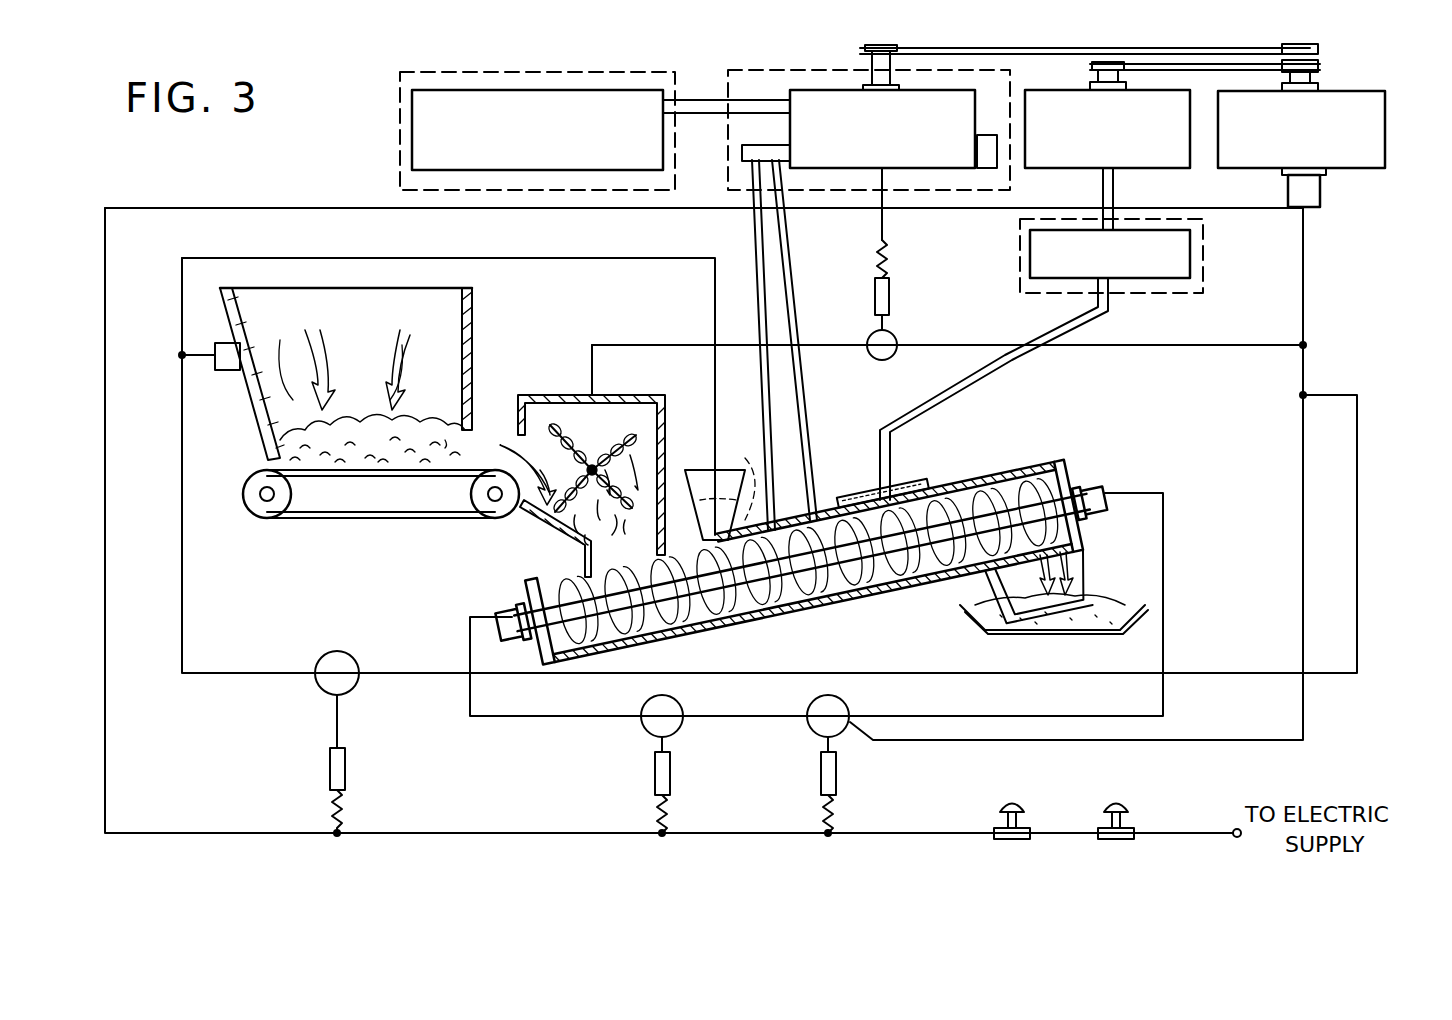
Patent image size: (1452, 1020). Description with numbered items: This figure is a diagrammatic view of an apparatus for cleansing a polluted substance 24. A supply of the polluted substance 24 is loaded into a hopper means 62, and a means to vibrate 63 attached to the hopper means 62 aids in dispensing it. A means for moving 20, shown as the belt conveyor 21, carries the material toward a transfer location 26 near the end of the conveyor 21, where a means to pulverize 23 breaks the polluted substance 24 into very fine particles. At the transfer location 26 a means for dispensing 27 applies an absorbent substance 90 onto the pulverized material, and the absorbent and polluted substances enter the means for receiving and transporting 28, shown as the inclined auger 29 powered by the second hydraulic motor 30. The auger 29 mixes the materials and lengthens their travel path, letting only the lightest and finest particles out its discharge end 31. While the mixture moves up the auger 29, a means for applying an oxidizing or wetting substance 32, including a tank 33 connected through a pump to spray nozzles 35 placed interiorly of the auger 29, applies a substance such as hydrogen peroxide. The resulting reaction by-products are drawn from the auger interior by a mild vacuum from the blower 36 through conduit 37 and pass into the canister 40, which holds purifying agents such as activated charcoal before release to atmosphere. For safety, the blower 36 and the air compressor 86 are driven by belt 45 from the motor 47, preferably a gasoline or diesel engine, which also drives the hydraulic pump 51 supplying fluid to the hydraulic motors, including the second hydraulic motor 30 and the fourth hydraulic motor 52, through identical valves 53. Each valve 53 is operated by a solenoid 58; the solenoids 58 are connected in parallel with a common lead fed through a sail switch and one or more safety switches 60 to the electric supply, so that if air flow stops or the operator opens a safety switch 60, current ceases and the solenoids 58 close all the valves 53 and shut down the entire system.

The means for moving 20 is at (381, 471).
The conveyor 21 is at (343, 478).
The means to pulverize 23 is at (528, 395).
The polluted substance 24 is at (405, 425).
The transfer location 26 is at (482, 505).
The means for dispensing an absorbent substance 27 is at (690, 470).
The means for receiving and transporting 28 is at (801, 551).
The auger 29 is at (804, 572).
The second hydraulic motor 30 is at (797, 546).
The discharge end 31 is at (1054, 585).
The means for applying an oxidizing or wetting substance 32 is at (642, 72).
The tank 33 is at (1140, 290).
The spray nozzles 35 is at (875, 459).
The blower 36 is at (945, 170).
The conduit 37 is at (790, 420).
The canister 40 is at (1000, 170).
The belt 45 is at (1165, 66).
The motor 47 is at (1343, 91).
The hydraulic pump 51 is at (1322, 192).
The fourth hydraulic motor 52 is at (588, 452).
The valves 53 is at (897, 340).
The solenoid 58 is at (889, 298).
The safety switch 60 is at (1102, 828).
The hopper means 62 is at (462, 312).
The means to vibrate 63 is at (222, 375).
The air compressor 86 is at (1140, 168).
The absorbent substance 90 is at (735, 484).